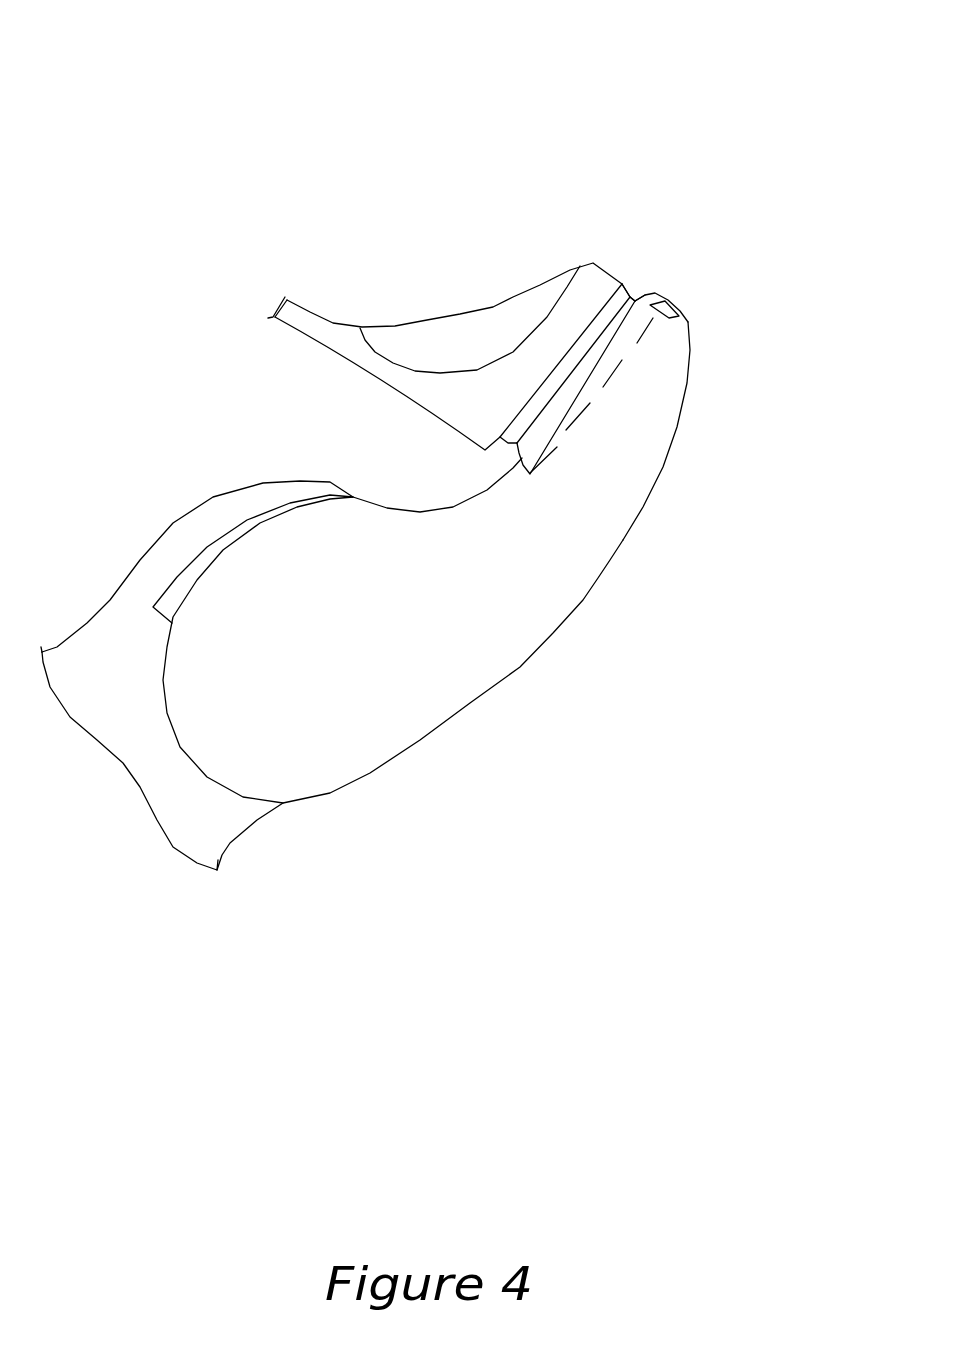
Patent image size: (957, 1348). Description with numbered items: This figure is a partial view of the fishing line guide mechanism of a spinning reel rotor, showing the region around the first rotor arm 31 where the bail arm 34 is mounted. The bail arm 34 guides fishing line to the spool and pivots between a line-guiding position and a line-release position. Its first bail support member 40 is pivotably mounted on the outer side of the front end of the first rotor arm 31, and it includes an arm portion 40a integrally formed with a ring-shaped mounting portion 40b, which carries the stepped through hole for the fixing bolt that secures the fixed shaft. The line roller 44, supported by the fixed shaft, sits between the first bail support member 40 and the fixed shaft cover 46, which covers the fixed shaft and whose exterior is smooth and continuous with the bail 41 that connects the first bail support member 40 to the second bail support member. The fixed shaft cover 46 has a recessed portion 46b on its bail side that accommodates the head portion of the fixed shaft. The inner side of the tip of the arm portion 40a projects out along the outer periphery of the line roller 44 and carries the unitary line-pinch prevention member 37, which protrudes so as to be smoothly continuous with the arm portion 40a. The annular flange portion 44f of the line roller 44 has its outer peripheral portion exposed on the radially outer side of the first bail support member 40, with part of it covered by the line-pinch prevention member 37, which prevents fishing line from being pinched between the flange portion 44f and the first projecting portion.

The bail arm 34 is at (717, 140).
The fixed shaft cover 46 is at (603, 283).
The recessed portion 46b is at (530, 300).
The line roller 44 is at (637, 294).
The flange portion 44f is at (650, 303).
The line-pinch prevention member 37 is at (678, 308).
The ring-shaped mounting portion 40b is at (695, 313).
The bail 41 is at (300, 307).
The arm portion 40a is at (577, 565).
The first bail support member 40 is at (525, 665).
The first rotor arm 31 is at (235, 820).